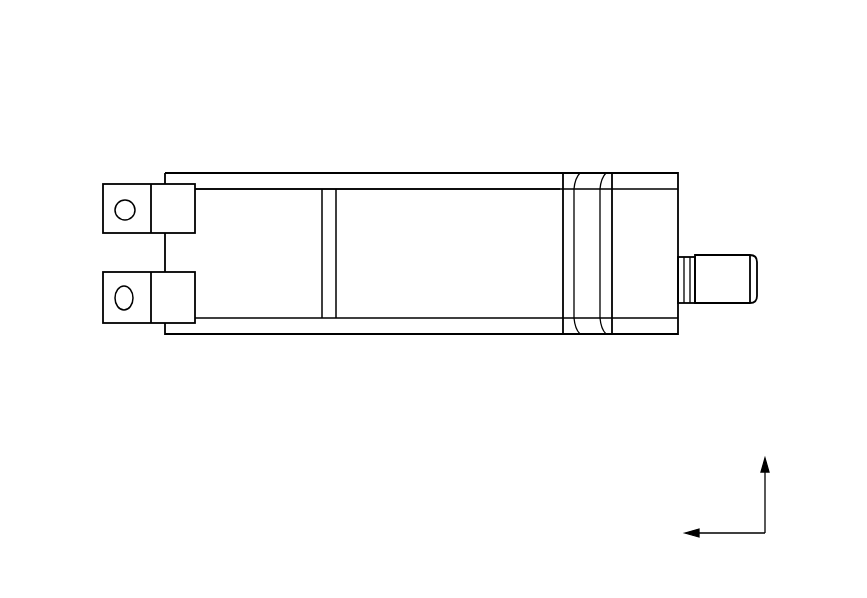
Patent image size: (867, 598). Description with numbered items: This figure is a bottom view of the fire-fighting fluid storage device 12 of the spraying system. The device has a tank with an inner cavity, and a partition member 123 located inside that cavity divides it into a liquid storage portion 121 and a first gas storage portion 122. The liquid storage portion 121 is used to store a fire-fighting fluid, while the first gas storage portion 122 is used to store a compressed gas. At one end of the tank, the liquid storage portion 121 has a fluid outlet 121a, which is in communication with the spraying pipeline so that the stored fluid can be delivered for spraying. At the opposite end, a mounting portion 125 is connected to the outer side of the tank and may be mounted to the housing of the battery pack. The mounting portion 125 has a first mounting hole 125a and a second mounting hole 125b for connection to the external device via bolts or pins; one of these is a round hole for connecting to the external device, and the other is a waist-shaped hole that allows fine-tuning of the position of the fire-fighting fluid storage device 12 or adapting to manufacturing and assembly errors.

The fire-fighting fluid storage device 12 is at (124, 70).
The liquid storage portion 121 is at (450, 303).
The fluid outlet 121a is at (722, 290).
The first gas storage portion 122 is at (257, 198).
The partition member 123 is at (328, 303).
The mounting portion 125 is at (168, 197).
The first mounting hole 125a is at (118, 215).
The second mounting hole 125b is at (123, 310).